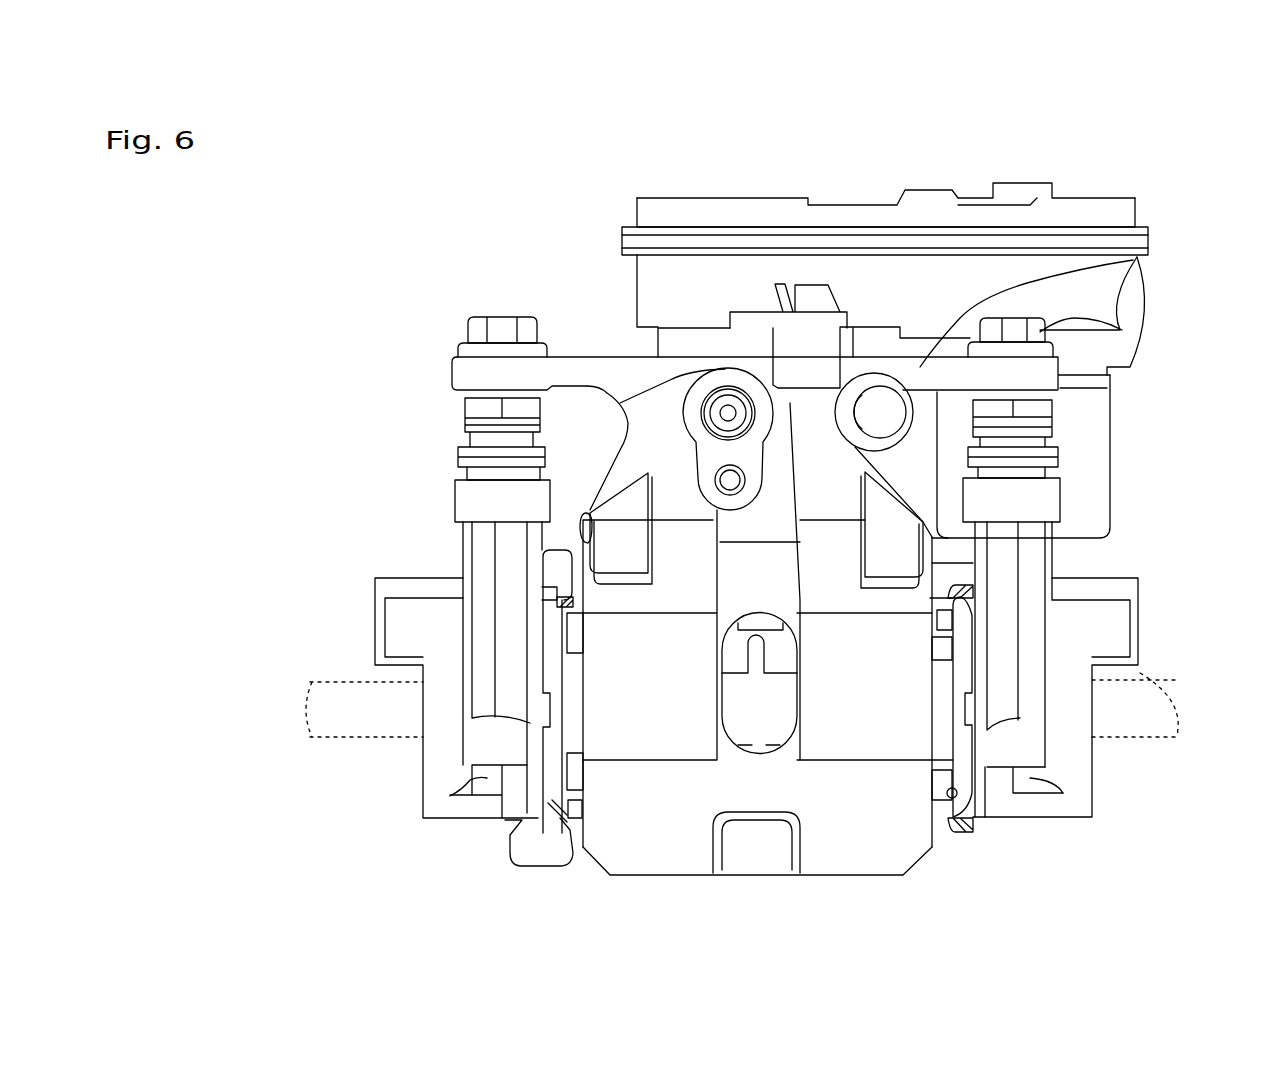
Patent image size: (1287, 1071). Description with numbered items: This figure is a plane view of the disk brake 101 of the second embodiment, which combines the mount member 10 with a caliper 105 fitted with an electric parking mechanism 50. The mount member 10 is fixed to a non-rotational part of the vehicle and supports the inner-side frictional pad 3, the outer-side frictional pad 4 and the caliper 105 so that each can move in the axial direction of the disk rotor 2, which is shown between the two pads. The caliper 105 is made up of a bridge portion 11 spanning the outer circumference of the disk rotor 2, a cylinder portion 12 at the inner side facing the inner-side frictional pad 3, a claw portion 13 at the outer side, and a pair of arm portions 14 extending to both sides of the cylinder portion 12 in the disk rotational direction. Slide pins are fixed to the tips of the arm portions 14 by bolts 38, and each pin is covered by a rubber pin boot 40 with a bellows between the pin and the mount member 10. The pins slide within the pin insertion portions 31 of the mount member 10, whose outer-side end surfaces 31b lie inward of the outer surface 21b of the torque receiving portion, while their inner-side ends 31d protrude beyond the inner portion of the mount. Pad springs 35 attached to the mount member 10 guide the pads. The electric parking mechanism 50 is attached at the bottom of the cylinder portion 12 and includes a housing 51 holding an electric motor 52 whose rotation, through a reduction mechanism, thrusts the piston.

The disk brake 101 is at (1170, 397).
The electric parking mechanism 50 is at (1118, 190).
The housing 51 is at (838, 212).
The arm portion 14 is at (1130, 281).
The bolt 38 is at (478, 333).
The rubber pin boot 40 is at (468, 428).
The inner-side end 31d is at (455, 480).
The electric motor 52 is at (1097, 473).
The pin insertion portion 31 is at (478, 548).
The outer-side end surface 31b is at (483, 778).
The surface of the outer-side torque receiving portion 21b is at (462, 823).
The mount member 10 is at (1122, 783).
The disk rotor 2 is at (1167, 672).
The cylinder portion 12 is at (652, 412).
The caliper 105 is at (590, 442).
The bridge portion 11 is at (630, 740).
The claw portion 13 is at (678, 857).
The inner-side frictional pad 3 is at (953, 647).
The outer-side frictional pad 4 is at (950, 827).
The pad spring 35 is at (545, 803).